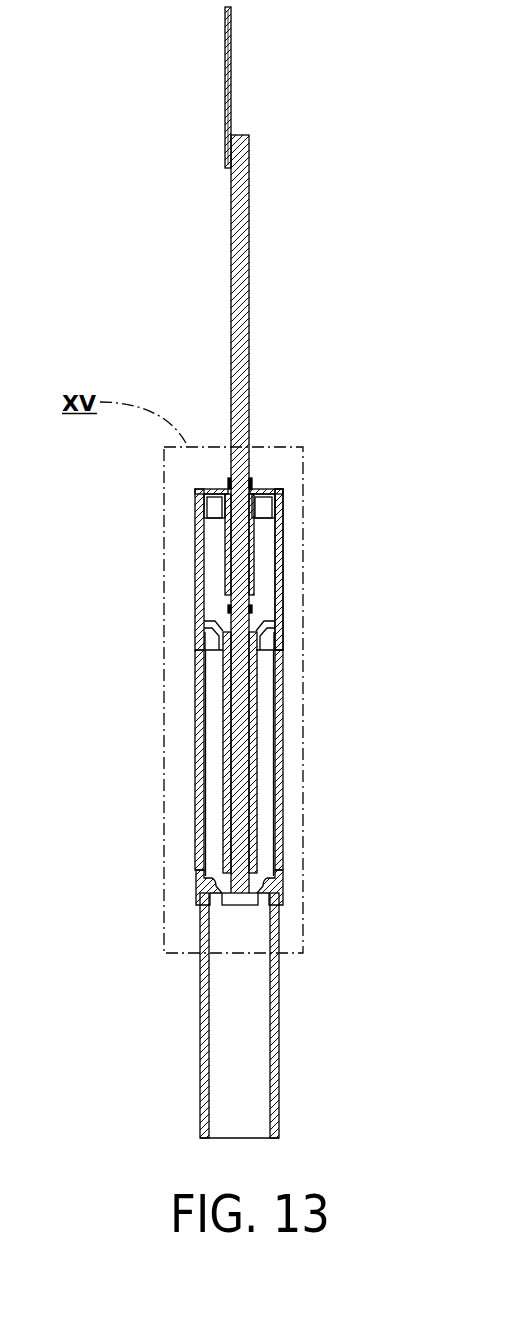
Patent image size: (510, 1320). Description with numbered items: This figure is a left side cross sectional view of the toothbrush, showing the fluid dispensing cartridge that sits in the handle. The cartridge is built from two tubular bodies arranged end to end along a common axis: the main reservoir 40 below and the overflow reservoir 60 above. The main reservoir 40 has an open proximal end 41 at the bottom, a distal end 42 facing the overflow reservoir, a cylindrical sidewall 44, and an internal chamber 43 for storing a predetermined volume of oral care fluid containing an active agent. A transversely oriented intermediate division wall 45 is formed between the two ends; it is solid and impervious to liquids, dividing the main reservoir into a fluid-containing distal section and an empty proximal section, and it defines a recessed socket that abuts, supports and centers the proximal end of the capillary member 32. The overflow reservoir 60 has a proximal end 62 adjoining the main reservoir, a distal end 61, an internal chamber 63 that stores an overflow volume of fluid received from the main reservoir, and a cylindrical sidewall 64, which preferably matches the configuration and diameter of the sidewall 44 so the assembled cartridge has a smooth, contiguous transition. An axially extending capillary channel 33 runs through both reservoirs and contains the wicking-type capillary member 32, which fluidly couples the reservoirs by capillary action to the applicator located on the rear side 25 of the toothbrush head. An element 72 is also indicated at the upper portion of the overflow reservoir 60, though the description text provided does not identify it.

The rear side 25 is at (231, 60).
The capillary member 32 is at (249, 247).
The capillary channel 33 is at (250, 758).
The main reservoir 40 is at (159, 997).
The proximal end 41 is at (220, 1137).
The distal end 42 is at (283, 633).
The internal chamber 43 is at (215, 801).
The cylindrical sidewall 44 is at (283, 690).
The intermediate division wall 45 is at (205, 878).
The overflow reservoir 60 is at (222, 564).
The distal end 61 is at (275, 472).
The proximal end 62 is at (217, 655).
The internal chamber 63 is at (213, 603).
The cylindrical sidewall 64 is at (283, 547).
The end cap 72 is at (205, 492).